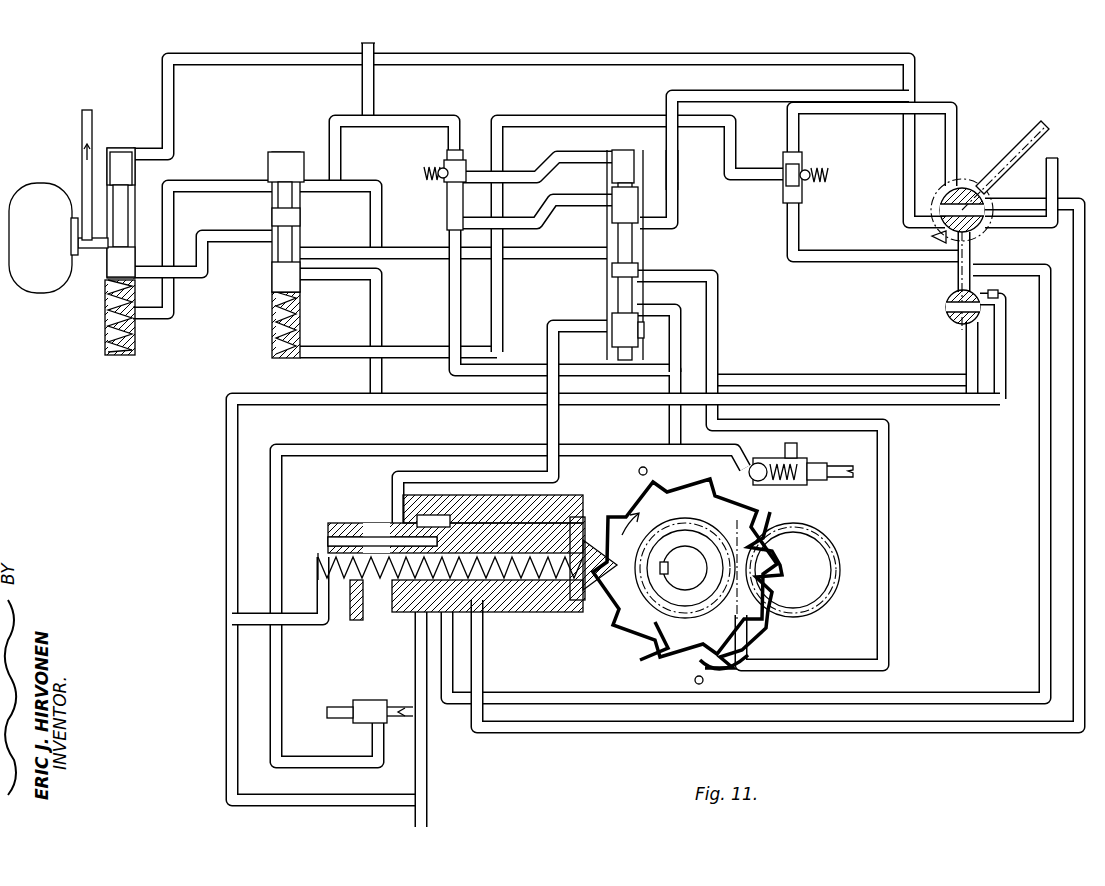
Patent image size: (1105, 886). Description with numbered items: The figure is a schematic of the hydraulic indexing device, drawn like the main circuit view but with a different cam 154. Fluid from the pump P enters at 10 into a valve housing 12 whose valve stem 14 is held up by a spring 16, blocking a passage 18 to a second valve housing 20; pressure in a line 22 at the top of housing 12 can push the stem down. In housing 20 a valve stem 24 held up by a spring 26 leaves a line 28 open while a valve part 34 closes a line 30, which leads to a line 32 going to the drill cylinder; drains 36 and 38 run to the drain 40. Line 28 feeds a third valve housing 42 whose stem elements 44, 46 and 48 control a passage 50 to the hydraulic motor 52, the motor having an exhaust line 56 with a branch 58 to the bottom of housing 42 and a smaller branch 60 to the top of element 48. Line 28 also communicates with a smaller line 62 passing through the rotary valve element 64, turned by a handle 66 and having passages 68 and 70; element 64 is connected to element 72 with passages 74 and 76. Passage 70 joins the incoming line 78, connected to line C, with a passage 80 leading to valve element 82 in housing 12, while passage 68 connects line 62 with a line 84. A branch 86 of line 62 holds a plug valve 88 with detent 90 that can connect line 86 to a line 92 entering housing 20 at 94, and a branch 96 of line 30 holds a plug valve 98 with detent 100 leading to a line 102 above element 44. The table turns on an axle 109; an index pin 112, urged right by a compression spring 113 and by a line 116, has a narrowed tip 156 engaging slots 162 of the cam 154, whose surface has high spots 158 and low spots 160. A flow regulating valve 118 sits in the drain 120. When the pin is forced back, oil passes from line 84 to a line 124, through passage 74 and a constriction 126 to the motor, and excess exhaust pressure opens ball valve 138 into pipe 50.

The fluid pressure inlet 10 is at (92, 250).
The valve housing 12 is at (107, 352).
The valve stem 14 is at (122, 212).
The spring 16 is at (135, 330).
The passage 18 is at (205, 273).
The second valve housing 20 is at (271, 332).
The line 22 is at (174, 130).
The valve stem 24 is at (272, 272).
The spring 26 is at (275, 345).
The line 28 is at (343, 250).
The line 30 is at (341, 162).
The line 32 is at (375, 92).
The valve part 34 is at (282, 218).
The drain 36 is at (172, 318).
The drain 38 is at (330, 285).
The drain 40 is at (382, 804).
The third valve housing 42 is at (606, 292).
The valve stem element 44 is at (630, 210).
The valve stem element 46 is at (636, 272).
The valve stem element 48 is at (615, 325).
The passage 50 is at (720, 312).
The hydraulic motor 52 is at (815, 528).
The exhaust line 56 is at (617, 446).
The branch 58 is at (682, 368).
The branch 60 is at (668, 308).
The line 62 is at (679, 162).
The rotary valve element 64 is at (935, 225).
The handle 66 is at (1008, 168).
The passage 68 is at (950, 196).
The passage 70 is at (982, 225).
The valve element 72 is at (946, 308).
The passage 74 is at (972, 296).
The passage 76 is at (955, 318).
The incoming line 78 is at (1040, 229).
The passage 80 is at (904, 122).
The valve element 82 is at (132, 160).
The line 84 is at (474, 730).
The branch 86 is at (799, 130).
The plug valve 88 is at (803, 158).
The spring-pressed detent 90 is at (806, 181).
The line 92 is at (594, 116).
The bottom connection of housing 20 94 is at (315, 358).
The branch 96 is at (450, 120).
The plug valve 98 is at (458, 160).
The spring-pressed detent 100 is at (440, 178).
The line 102 is at (562, 146).
The axle 109 is at (683, 568).
The index pin 112 is at (528, 602).
The compression spring 113 is at (345, 536).
The line 116 is at (530, 484).
The adjustable flow regulating valve 118 is at (350, 700).
The drain 120 is at (283, 662).
The line 124 is at (537, 694).
The constriction 126 is at (997, 296).
The ball valve 138 is at (812, 460).
The cam 154 is at (628, 632).
The tip 156 is at (590, 540).
The high spots 158 is at (748, 468).
The low spots 160 is at (700, 488).
The slots 162 is at (775, 575).
The line C is at (80, 118).
The pump P is at (50, 290).